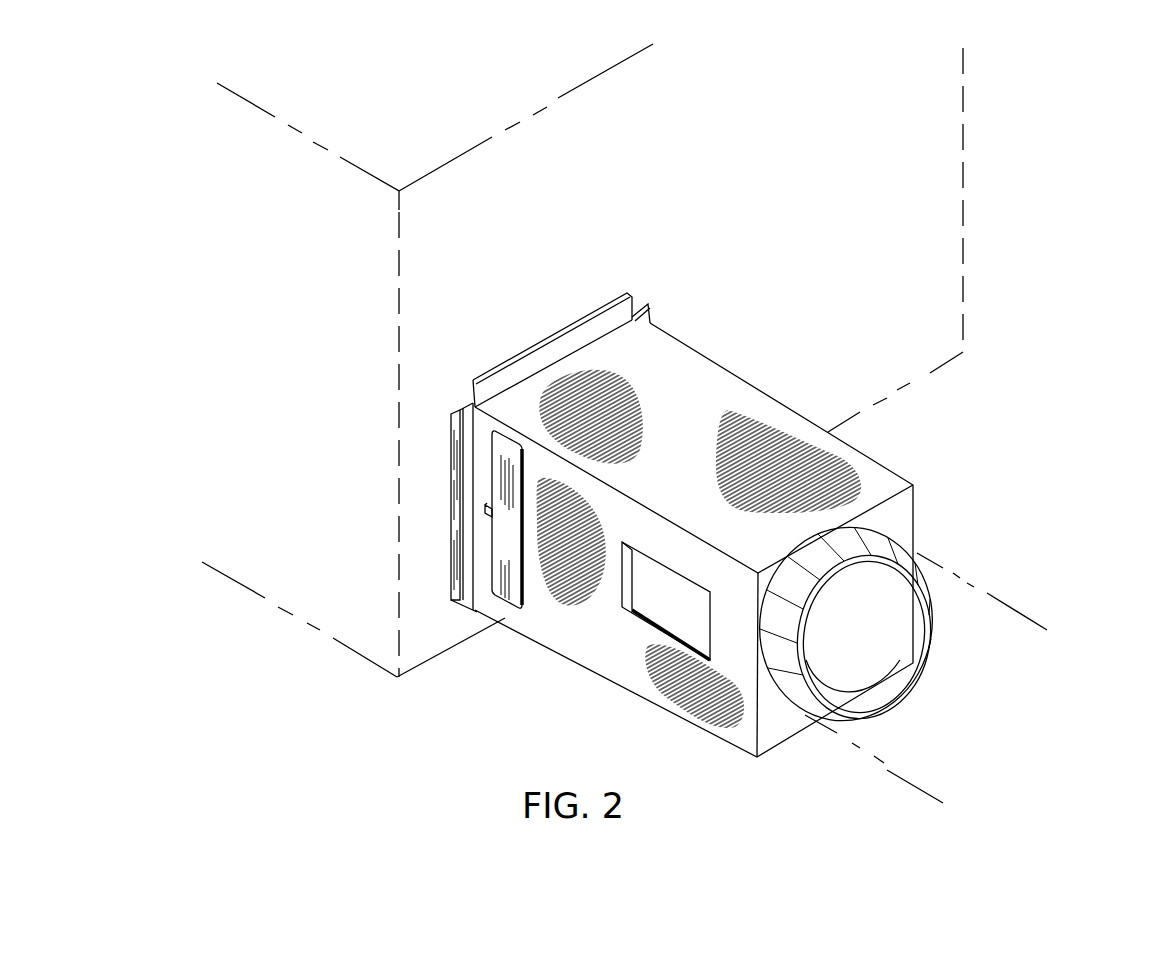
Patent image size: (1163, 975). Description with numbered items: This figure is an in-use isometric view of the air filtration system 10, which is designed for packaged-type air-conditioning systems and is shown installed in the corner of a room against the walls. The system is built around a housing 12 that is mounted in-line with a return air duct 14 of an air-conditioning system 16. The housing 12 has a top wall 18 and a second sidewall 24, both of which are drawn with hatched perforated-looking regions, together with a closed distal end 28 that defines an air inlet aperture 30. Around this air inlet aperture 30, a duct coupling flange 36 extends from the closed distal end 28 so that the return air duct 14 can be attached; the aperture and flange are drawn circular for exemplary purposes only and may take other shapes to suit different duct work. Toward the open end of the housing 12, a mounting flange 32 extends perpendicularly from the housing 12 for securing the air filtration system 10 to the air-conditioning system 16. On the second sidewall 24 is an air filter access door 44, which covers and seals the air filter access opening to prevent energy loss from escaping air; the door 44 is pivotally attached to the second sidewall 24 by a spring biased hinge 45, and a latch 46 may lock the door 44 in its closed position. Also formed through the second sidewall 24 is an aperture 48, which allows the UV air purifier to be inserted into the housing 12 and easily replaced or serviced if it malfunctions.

The air filtration system 10 is at (775, 345).
The housing 12 is at (900, 470).
The return air duct 14 is at (993, 638).
The air-conditioning system 16 is at (310, 550).
The top wall 18 is at (670, 367).
The second sidewall 24 is at (723, 698).
The closed distal end 28 is at (918, 519).
The air inlet aperture 30 is at (858, 668).
The mounting flange 32 is at (455, 412).
The duct coupling flange 36 is at (790, 672).
The air filter access door 44 is at (505, 577).
The spring biased hinge 45 is at (522, 533).
The latch 46 is at (487, 514).
The aperture 48 is at (660, 603).